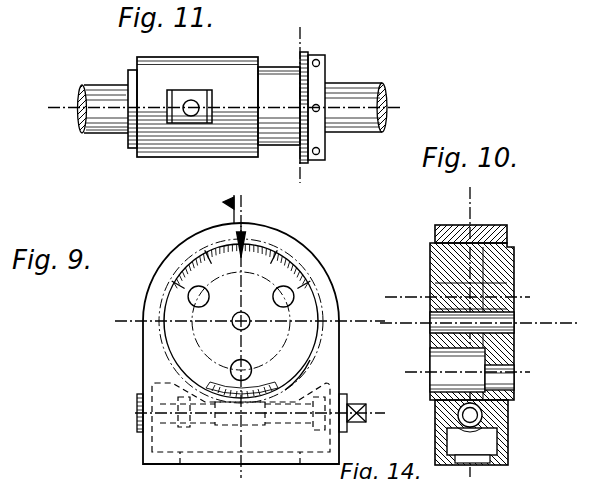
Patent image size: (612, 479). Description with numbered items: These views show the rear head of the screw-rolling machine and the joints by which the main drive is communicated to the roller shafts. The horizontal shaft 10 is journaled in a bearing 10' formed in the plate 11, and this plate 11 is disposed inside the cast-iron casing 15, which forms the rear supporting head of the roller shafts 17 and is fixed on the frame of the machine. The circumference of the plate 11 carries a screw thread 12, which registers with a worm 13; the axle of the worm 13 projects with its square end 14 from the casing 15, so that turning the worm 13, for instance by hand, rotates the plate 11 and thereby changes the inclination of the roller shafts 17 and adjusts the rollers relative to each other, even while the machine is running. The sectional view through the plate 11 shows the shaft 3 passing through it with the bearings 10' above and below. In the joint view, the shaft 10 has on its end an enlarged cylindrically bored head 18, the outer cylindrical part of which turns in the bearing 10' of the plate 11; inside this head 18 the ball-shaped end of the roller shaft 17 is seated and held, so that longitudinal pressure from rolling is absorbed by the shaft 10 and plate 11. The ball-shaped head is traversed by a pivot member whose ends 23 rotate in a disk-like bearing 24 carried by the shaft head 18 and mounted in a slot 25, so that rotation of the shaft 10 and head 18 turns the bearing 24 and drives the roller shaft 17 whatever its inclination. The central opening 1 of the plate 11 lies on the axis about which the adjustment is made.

In FIG. 9, the central shaft opening 1 is at (237, 331).
In FIG. 10, the shaft 3 is at (428, 328).
In FIG. 11, the shaft 10 is at (356, 91).
In FIG. 9, the bearing 10' is at (240, 324).
In FIG. 10, the bearing 10' is at (467, 341).
In FIG. 9, the plate 11 is at (241, 321).
In FIG. 10, the plate 11 is at (452, 258).
In FIG. 9, the screw thread 12 is at (291, 345).
In FIG. 9, the worm 13 is at (225, 421).
In FIG. 10, the worm 13 is at (508, 420).
In FIG. 9, the square end 14 is at (355, 409).
In FIG. 9, the cast-iron casing 15 is at (314, 260).
In FIG. 10, the cast-iron casing 15 is at (436, 232).
In FIG. 11, the roller shaft 17 is at (80, 103).
In FIG. 11, the cylindrically bored head 18 is at (231, 107).
In FIG. 11, the pivot member end 23 is at (193, 115).
In FIG. 11, the disk-like bearing 24 is at (186, 92).
In FIG. 11, the slot 25 is at (163, 128).